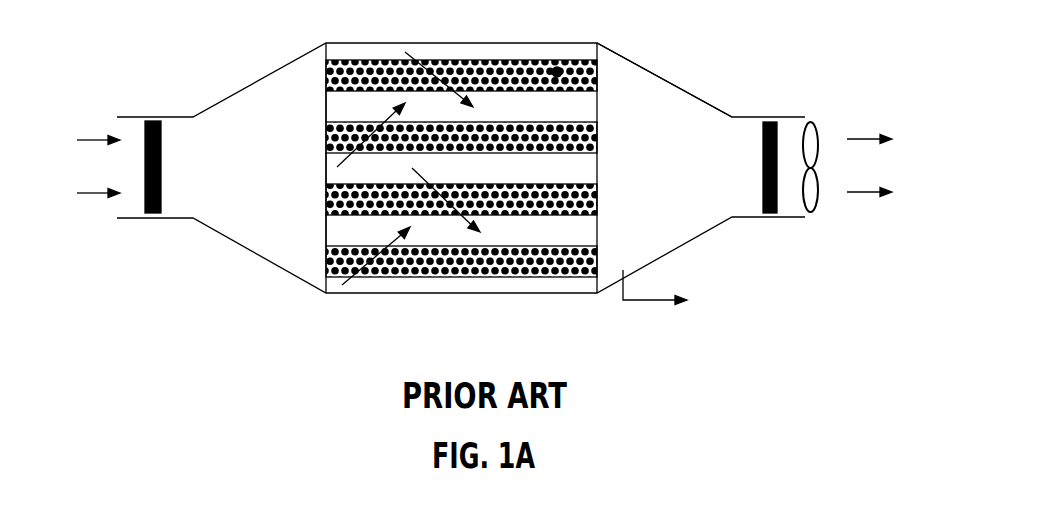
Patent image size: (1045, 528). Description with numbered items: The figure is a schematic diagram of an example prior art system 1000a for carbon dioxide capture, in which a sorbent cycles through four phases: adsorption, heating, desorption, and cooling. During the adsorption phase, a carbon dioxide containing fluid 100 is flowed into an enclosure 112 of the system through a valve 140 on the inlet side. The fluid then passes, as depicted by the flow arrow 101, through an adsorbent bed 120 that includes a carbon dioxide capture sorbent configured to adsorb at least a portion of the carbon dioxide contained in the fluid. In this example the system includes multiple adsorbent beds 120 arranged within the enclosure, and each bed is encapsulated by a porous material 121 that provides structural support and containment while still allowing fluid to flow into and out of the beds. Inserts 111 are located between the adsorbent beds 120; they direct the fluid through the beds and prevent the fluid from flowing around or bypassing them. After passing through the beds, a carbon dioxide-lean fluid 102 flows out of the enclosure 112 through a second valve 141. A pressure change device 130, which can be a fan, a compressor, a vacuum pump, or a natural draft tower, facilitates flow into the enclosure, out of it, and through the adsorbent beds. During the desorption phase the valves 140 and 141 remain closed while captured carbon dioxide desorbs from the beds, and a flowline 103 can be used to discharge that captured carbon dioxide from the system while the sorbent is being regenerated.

The prior art system for carbon dioxide capture 1000a is at (780, 320).
The carbon dioxide containing fluid 100 is at (95, 193).
The flow arrow 101 is at (413, 43).
The carbon dioxide-lean fluid 102 is at (865, 192).
The flowline 103 is at (655, 300).
The inserts 111 is at (325, 110).
The enclosure 112 is at (640, 62).
The adsorbent bed 120 is at (558, 68).
The porous material 121 is at (355, 60).
The pressure change device 130 is at (817, 125).
The valve 140 is at (152, 121).
The valve 141 is at (771, 122).